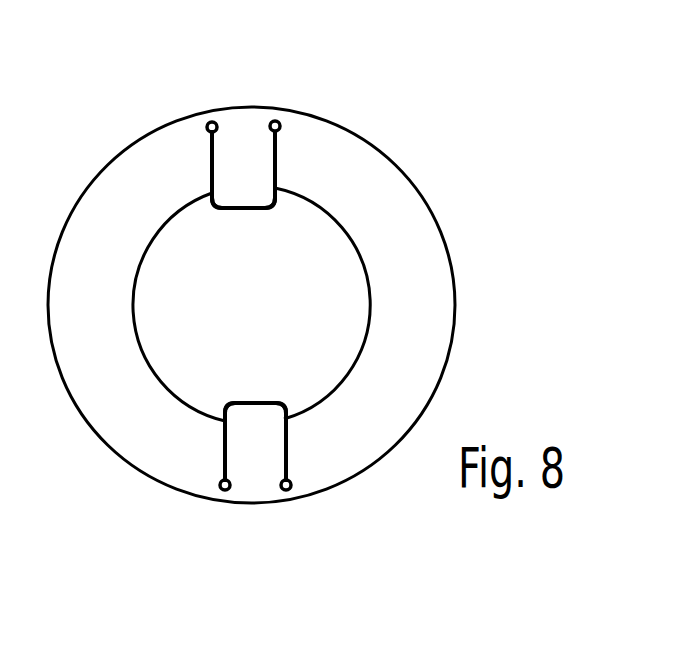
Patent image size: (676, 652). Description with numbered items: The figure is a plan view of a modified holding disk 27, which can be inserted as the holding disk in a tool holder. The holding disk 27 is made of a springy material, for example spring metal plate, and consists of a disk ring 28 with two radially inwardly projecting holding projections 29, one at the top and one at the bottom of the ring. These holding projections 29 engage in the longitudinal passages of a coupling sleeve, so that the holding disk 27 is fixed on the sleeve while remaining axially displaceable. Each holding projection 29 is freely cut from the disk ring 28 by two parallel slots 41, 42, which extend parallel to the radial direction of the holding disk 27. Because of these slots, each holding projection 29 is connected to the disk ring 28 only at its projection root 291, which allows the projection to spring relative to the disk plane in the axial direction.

The holding disk 27 is at (370, 136).
The disk ring 28 is at (394, 260).
The holding projection 29 is at (240, 190).
The projection root 291 is at (242, 138).
The slot 41 is at (210, 150).
The slot 42 is at (279, 152).